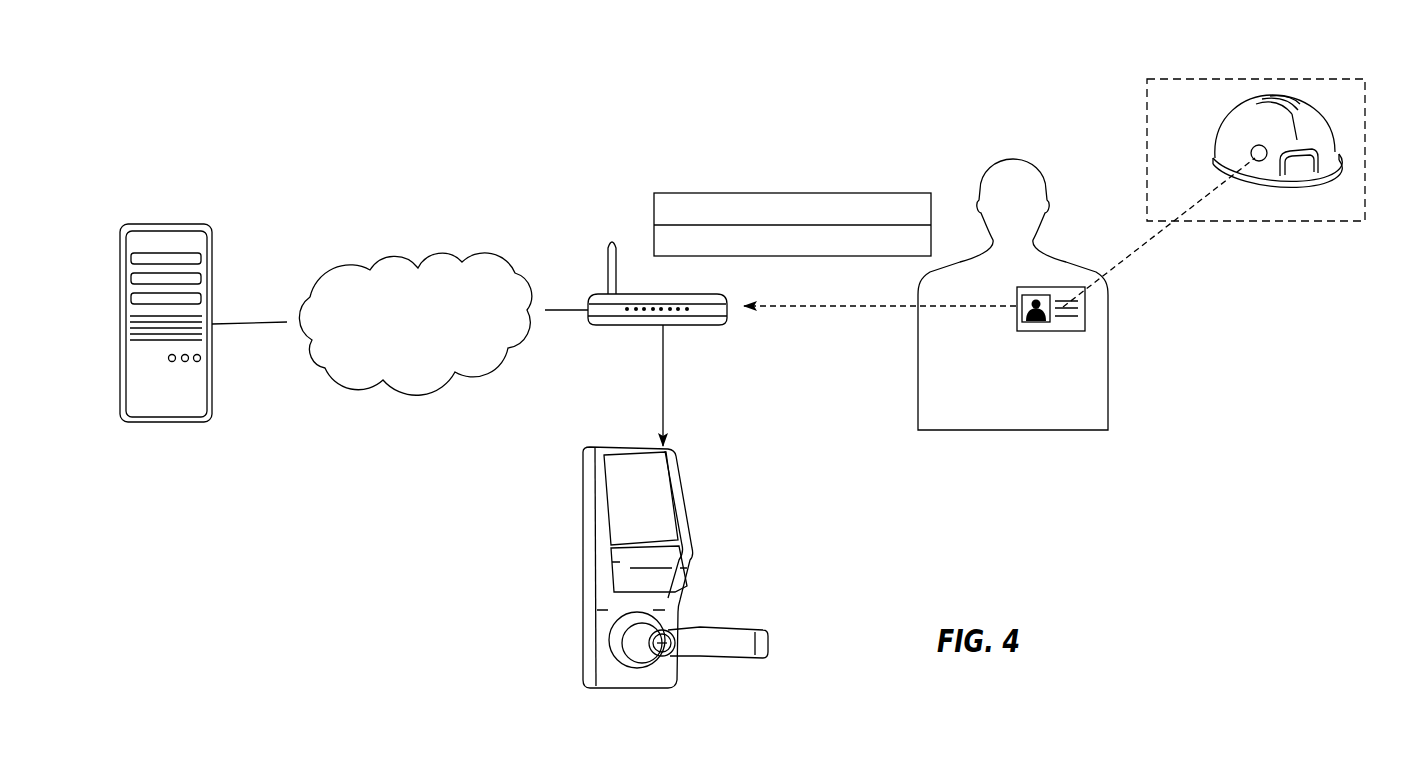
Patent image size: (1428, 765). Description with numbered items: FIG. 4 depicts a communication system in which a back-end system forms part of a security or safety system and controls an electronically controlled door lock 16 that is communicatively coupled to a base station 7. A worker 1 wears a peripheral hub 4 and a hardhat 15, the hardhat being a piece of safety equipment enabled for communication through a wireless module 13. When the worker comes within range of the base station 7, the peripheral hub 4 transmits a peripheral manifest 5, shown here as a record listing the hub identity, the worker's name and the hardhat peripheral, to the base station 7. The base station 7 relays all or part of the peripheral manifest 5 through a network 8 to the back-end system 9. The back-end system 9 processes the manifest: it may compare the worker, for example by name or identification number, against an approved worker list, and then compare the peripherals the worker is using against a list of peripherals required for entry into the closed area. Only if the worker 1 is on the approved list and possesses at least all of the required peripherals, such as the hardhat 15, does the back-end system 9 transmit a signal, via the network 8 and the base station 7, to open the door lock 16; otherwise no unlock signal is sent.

The worker 1 is at (1050, 200).
The peripheral hub 4 is at (1089, 305).
The peripheral manifest 5 is at (779, 190).
The base station 7 is at (601, 285).
The network 8 is at (371, 259).
The back-end system 9 is at (166, 216).
The wireless module 13 is at (1249, 146).
The hardhat 15 is at (1285, 129).
The door lock 16 is at (694, 496).